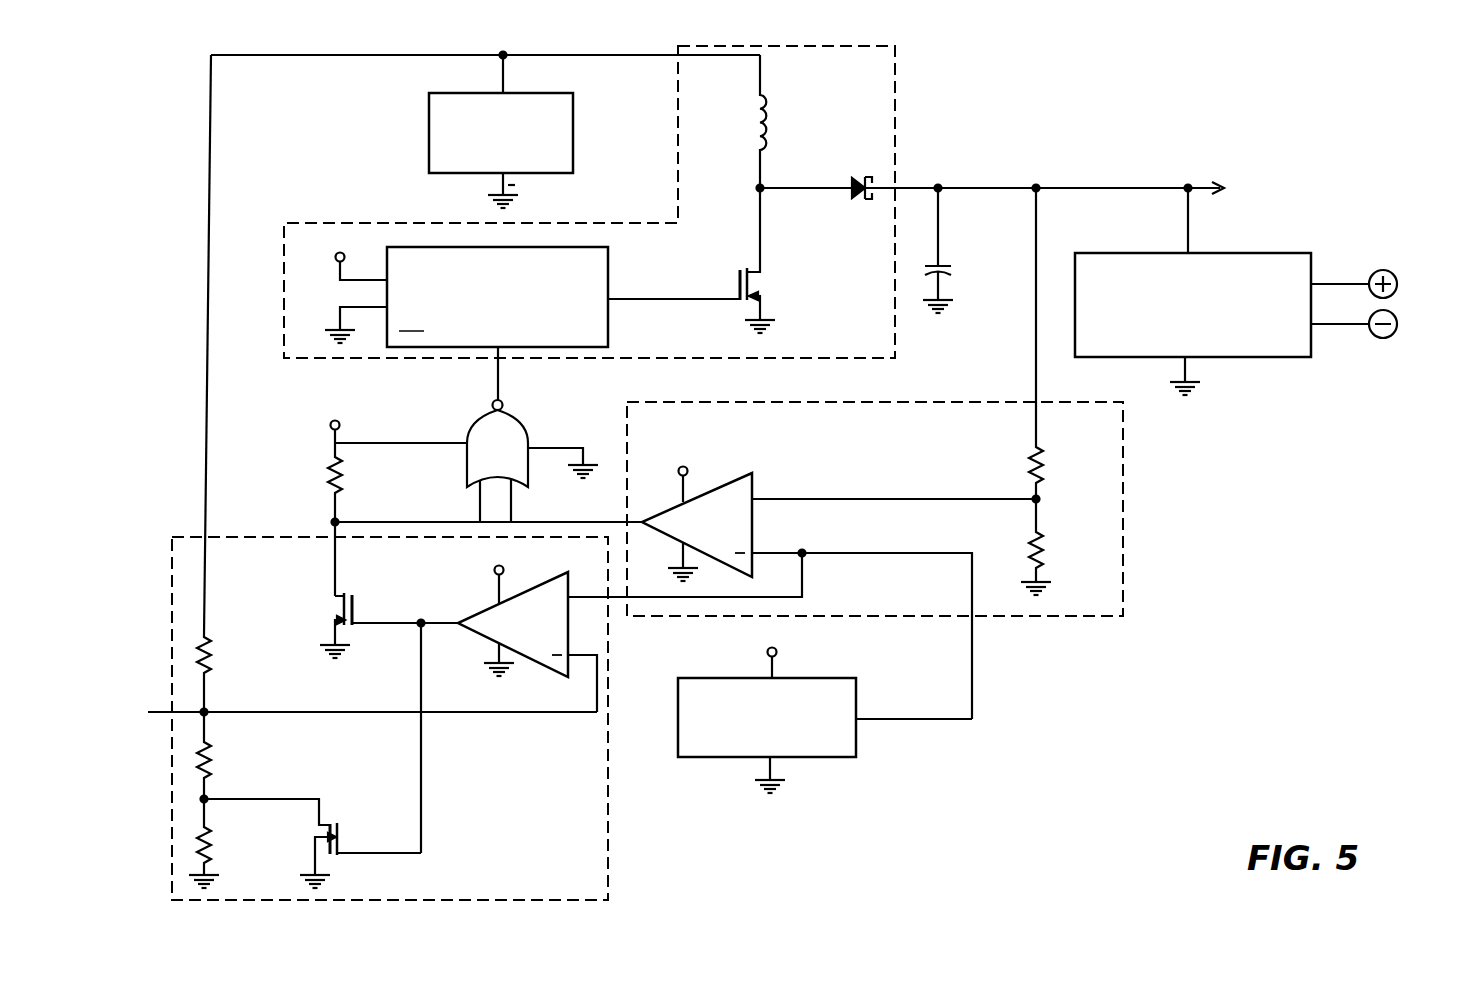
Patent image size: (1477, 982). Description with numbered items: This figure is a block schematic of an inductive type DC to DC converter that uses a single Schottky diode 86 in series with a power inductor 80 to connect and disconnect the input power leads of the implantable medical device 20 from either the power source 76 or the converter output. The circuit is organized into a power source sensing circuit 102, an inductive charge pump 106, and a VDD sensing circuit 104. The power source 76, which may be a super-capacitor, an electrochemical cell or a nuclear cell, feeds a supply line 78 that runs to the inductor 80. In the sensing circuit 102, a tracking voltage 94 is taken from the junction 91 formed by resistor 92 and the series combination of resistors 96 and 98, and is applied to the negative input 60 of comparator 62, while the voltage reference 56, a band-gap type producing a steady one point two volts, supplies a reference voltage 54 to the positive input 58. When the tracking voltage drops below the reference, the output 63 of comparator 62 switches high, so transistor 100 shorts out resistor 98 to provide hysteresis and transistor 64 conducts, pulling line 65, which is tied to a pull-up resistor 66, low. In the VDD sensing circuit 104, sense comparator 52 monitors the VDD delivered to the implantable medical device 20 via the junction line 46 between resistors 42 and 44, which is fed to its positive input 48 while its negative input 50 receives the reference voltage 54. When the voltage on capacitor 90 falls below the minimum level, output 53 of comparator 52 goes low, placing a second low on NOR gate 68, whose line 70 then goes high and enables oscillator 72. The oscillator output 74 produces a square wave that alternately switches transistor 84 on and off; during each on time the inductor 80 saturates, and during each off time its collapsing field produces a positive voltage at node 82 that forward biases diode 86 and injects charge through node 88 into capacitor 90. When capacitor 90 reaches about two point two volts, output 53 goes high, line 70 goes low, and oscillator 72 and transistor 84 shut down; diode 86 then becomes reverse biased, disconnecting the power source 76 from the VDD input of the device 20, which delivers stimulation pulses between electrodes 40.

The implantable medical device 20 is at (1308, 253).
The electrodes 40 is at (1397, 284).
The resistor 42 is at (1045, 450).
The resistor 44 is at (1045, 537).
The voltage divider output line 46 is at (965, 499).
The comparator positive input 48 is at (757, 499).
The comparator negative input 50 is at (757, 553).
The sense comparator 52 is at (735, 478).
The output of comparator 52 53 is at (567, 522).
The reference voltage 54 is at (972, 668).
The voltage reference 56 is at (843, 678).
The positive input 58 is at (580, 597).
The negative input 60 is at (580, 655).
The comparator 62 is at (546, 665).
The output of comparator 62 63 is at (421, 620).
The transistor 64 is at (338, 596).
The line 65 is at (411, 522).
The pull-up resistor 66 is at (306, 525).
The NOR gate 68 is at (520, 422).
The line 70 is at (498, 378).
The oscillator 72 is at (465, 287).
The output of oscillator 72 74 is at (706, 299).
The power source 76 is at (429, 122).
The power supply line 78 is at (645, 56).
The inductor 80 is at (770, 115).
The switching node 82 is at (745, 188).
The transistor 84 is at (755, 292).
The diode 86 is at (865, 175).
The output node 88 is at (938, 188).
The capacitor 90 is at (940, 265).
The junction 91 is at (155, 712).
The resistor 92 is at (209, 643).
The tracking voltage 94 is at (245, 712).
The resistor 96 is at (207, 845).
The resistor 98 is at (208, 748).
The transistor 100 is at (323, 825).
The power source sensing circuit 102 is at (608, 835).
The VDD sensing circuit 104 is at (1123, 548).
The inductive charge pump 106 is at (896, 70).